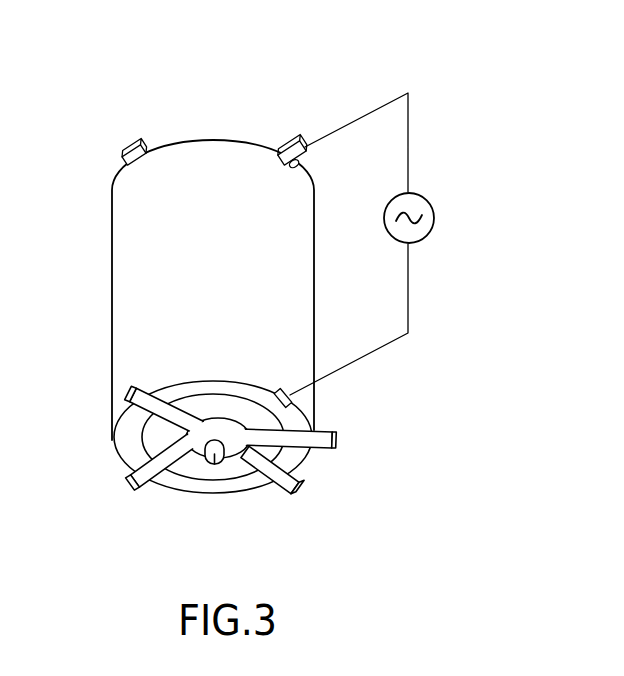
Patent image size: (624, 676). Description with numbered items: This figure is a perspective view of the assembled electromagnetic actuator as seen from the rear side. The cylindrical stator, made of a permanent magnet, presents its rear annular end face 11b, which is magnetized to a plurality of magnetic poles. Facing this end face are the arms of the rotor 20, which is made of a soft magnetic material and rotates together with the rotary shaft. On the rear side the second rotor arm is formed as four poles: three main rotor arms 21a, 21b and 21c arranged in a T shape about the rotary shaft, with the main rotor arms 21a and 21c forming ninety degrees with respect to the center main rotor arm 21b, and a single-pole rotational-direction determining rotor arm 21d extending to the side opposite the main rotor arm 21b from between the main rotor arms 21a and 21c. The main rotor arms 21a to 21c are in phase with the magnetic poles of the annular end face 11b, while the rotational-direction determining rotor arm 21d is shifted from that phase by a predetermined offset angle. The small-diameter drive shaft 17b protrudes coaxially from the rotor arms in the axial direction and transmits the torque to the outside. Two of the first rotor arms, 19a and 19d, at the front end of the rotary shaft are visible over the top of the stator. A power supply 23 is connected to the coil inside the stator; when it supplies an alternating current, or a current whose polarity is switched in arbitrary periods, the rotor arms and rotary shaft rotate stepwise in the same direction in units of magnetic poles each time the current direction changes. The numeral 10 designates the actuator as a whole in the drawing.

The discharge lamp 10 is at (476, 107).
The annular end face 11b is at (127, 440).
The drive shaft 17b is at (213, 462).
The rotor arm 19a is at (126, 146).
The rotor arm 19d is at (284, 143).
The rotor 20 is at (352, 463).
The main rotor arm 21a is at (126, 393).
The main rotor arm 21b is at (125, 480).
The main rotor arm 21c is at (308, 490).
The rotational-direction determining rotor arm 21d is at (335, 442).
The power supply 23 is at (382, 250).